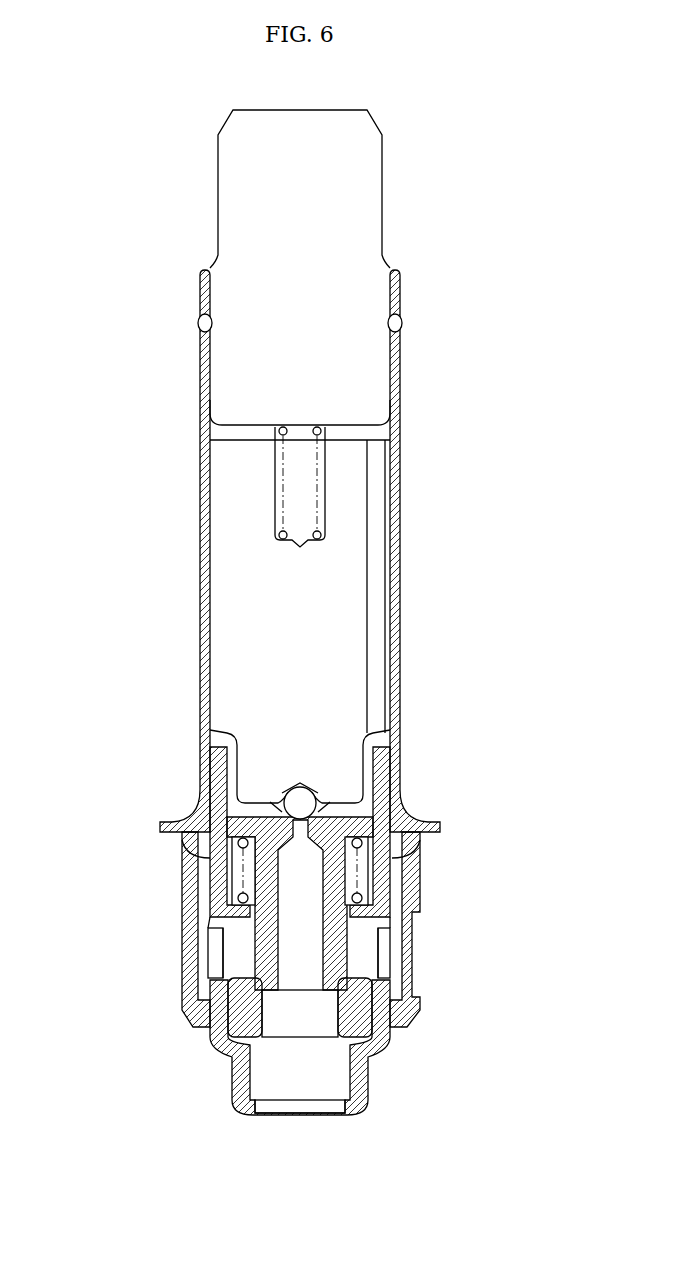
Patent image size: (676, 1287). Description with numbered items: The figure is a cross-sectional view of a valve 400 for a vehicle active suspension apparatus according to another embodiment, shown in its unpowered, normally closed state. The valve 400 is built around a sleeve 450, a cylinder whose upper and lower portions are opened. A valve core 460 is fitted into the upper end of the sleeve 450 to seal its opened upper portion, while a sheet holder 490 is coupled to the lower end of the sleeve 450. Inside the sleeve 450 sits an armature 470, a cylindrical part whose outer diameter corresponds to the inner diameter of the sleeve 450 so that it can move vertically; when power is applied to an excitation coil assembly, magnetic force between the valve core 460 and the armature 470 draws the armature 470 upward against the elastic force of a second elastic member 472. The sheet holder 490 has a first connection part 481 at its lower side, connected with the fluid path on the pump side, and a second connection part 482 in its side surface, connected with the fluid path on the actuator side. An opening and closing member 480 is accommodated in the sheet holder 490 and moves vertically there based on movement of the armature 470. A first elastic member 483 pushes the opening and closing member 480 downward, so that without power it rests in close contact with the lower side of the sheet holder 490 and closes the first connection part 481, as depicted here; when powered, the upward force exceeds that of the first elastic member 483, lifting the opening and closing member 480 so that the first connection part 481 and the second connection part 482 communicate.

The valve 400 is at (406, 108).
The valve core 460 is at (362, 186).
The sleeve 450 is at (398, 426).
The armature 470 is at (335, 626).
The second elastic member 472 is at (325, 495).
The opening and closing member 480 is at (410, 875).
The first connection part 481 is at (292, 1072).
The second connection part 482 is at (388, 945).
The first elastic member 483 is at (235, 871).
The sheet holder 490 is at (213, 1040).